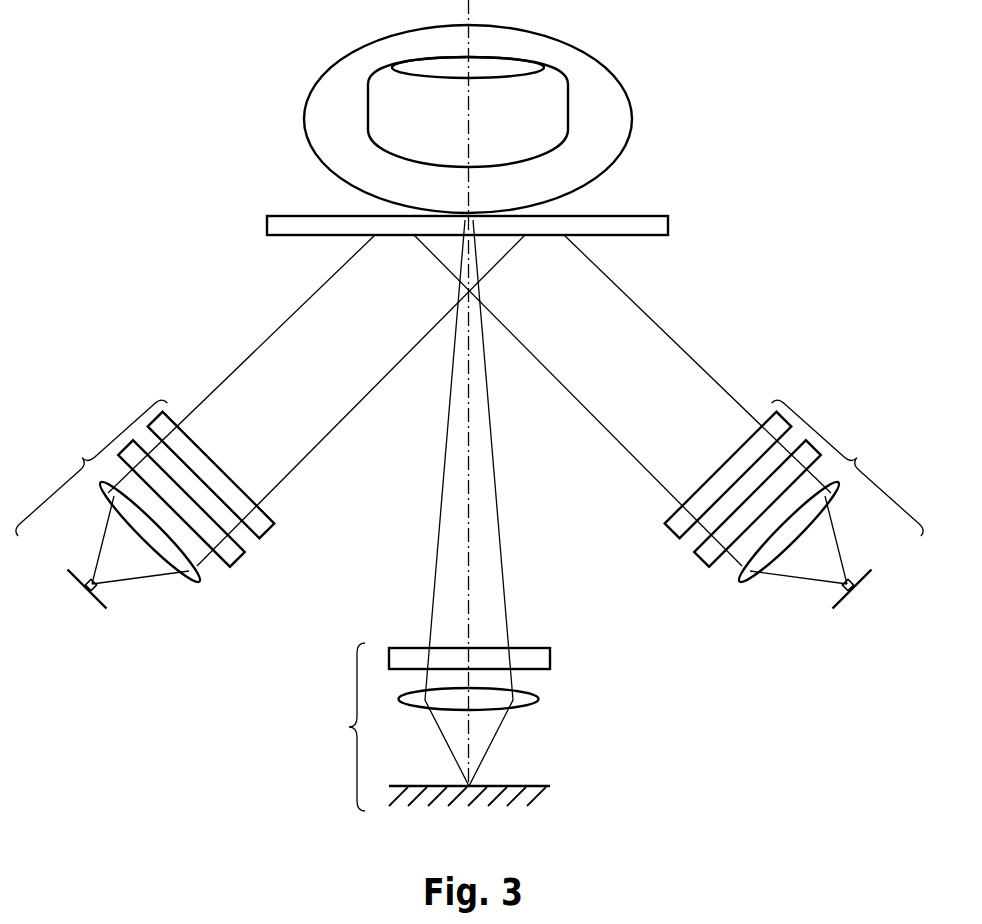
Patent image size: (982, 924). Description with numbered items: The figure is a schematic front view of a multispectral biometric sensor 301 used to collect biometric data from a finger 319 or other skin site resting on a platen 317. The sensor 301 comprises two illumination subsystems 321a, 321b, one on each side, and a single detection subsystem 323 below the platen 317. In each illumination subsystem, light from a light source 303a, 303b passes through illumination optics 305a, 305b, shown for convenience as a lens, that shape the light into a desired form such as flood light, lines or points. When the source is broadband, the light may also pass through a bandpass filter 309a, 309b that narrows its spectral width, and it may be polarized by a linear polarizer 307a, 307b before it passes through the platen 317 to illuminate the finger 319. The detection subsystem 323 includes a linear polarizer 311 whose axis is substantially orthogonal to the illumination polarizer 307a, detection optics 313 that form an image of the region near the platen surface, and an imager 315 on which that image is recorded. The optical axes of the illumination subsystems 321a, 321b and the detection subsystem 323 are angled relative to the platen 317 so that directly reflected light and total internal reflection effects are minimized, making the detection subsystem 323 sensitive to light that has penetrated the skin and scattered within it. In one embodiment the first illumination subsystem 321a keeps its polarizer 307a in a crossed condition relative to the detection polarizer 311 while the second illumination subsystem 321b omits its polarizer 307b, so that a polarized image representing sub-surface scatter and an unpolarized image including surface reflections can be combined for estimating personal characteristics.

The multispectral sensor 301 is at (226, 306).
The light source 303a is at (94, 602).
The light source 303b is at (838, 606).
The illumination optics 305a is at (218, 598).
The illumination optics 305b is at (740, 582).
The linear polarizer 307a is at (244, 557).
The linear polarizer 307b is at (697, 561).
The bandpass filter 309a is at (276, 526).
The bandpass filter 309b is at (676, 510).
The linear polarizer 311 is at (550, 659).
The detection optics 313 is at (540, 700).
The imager 315 is at (541, 786).
The platen 317 is at (669, 226).
The finger 319 is at (605, 66).
The illumination subsystem 321a is at (87, 463).
The illumination subsystem 321b is at (852, 463).
The detection subsystem 323 is at (334, 727).